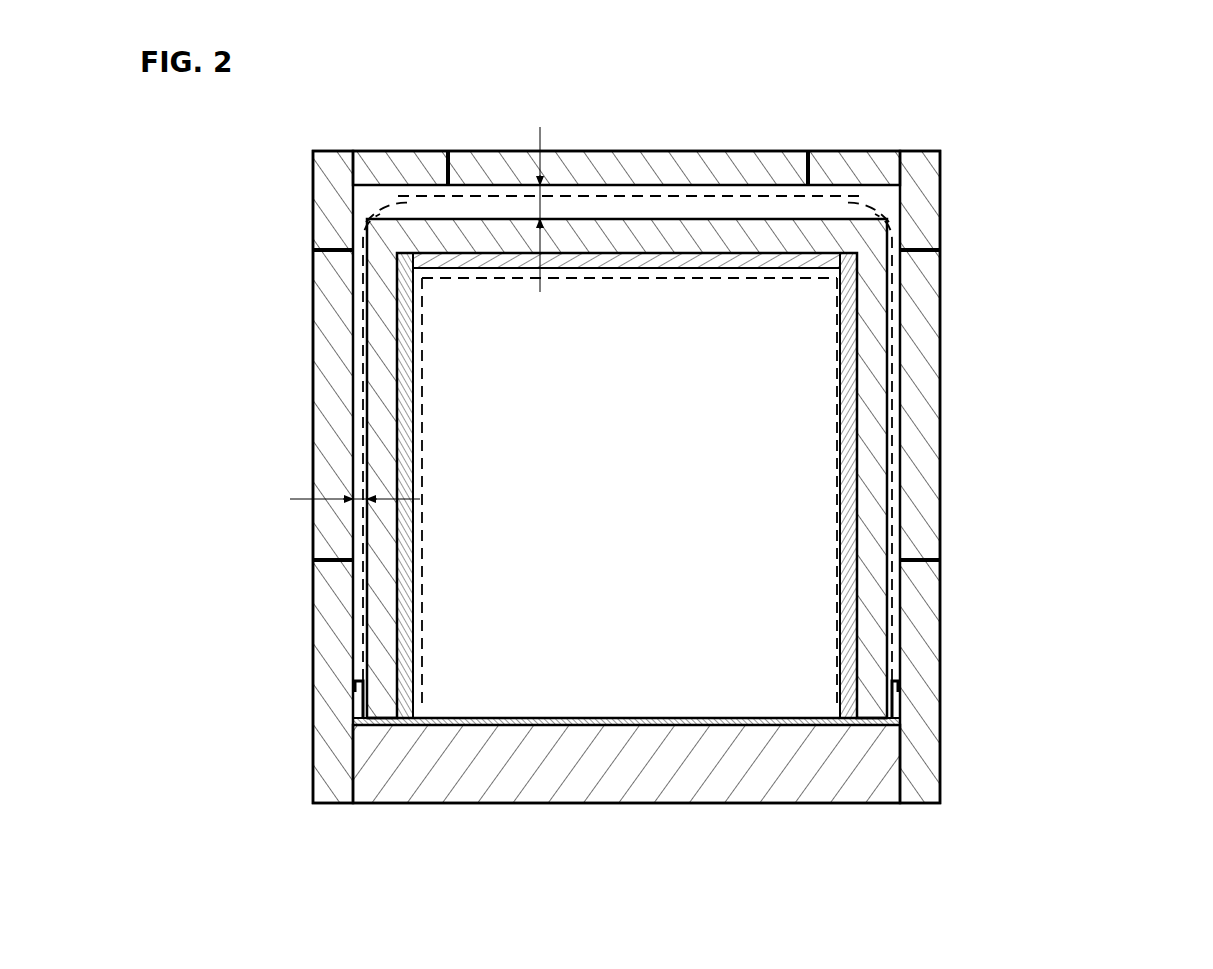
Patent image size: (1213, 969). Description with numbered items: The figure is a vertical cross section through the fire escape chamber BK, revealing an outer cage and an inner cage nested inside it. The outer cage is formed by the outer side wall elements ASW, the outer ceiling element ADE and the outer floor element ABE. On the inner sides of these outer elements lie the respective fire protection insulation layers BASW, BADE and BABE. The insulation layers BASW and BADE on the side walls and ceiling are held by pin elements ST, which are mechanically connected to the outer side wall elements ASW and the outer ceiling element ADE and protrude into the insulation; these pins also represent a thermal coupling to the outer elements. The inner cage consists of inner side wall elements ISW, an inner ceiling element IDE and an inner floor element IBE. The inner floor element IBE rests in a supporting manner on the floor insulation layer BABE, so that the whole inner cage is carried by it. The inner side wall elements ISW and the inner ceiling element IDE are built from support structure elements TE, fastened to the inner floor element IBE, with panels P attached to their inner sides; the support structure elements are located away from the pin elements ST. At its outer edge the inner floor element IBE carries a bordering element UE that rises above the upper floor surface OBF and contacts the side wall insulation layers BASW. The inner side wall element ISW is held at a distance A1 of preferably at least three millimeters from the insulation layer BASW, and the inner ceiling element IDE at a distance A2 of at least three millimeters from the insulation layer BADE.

The fire escape chamber BK is at (1106, 158).
The outer side wall element ASW is at (318, 318).
The fire protection insulation layer of the outer side wall elements BASW is at (330, 605).
The outer ceiling element ADE is at (742, 152).
The fire protection insulation layer of the outer ceiling element BADE is at (635, 165).
The outer floor element ABE is at (757, 800).
The fire protection insulation layer of the outer floor element BABE is at (520, 790).
The pin element ST is at (448, 168).
The support structure element TE is at (853, 228).
The inner ceiling element IDE is at (600, 282).
The panel P is at (410, 336).
The upper floor surface OBF is at (630, 716).
The inner floor element IBE is at (800, 718).
The bordering element UE is at (360, 687).
The inner side wall element ISW is at (422, 413).
The distance between inner side wall element and fire protection insulation layer A1 is at (352, 497).
The distance between inner ceiling element and fire protection insulation layer A2 is at (540, 205).